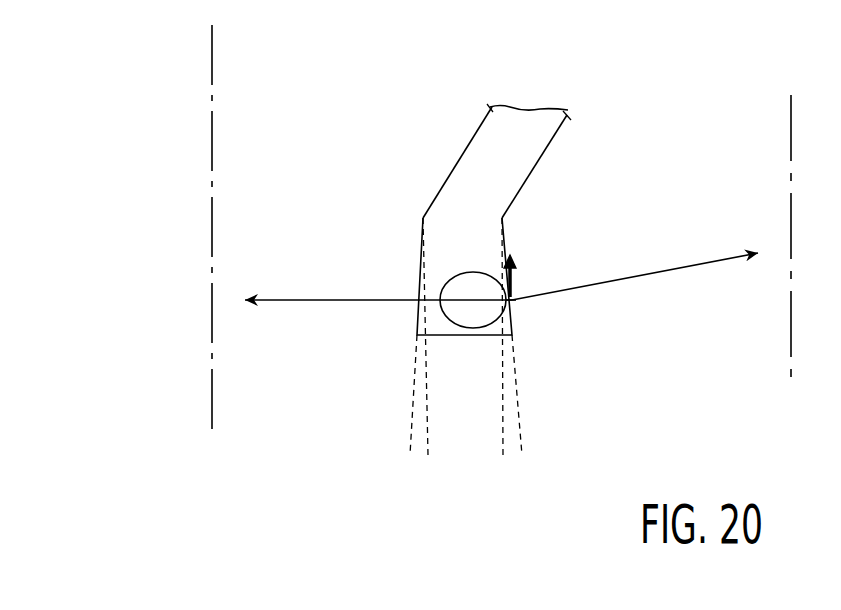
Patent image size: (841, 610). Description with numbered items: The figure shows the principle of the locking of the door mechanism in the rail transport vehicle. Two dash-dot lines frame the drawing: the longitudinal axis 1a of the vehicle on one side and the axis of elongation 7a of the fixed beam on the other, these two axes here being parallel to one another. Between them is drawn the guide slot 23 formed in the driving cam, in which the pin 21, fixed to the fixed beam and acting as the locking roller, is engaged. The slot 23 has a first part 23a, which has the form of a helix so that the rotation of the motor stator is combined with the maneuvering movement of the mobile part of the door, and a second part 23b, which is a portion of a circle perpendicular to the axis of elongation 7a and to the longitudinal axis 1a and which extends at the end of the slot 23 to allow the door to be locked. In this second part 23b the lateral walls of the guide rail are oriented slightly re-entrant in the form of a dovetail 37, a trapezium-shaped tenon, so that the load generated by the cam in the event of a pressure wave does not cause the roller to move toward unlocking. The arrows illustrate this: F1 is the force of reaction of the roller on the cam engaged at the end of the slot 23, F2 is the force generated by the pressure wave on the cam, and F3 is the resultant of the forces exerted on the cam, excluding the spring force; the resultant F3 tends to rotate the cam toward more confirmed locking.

The longitudinal axis 1a is at (212, 117).
The axis of elongation 7a is at (791, 152).
The pin 21 is at (477, 318).
The slot 23 is at (449, 250).
The first part of the slot 23a is at (475, 150).
The second part of the slot 23b is at (422, 253).
The dovetail 37 is at (513, 313).
The force of reaction F1 is at (642, 280).
The force generated by the pressure wave F2 is at (350, 302).
The resultant of the forces F3 is at (492, 265).